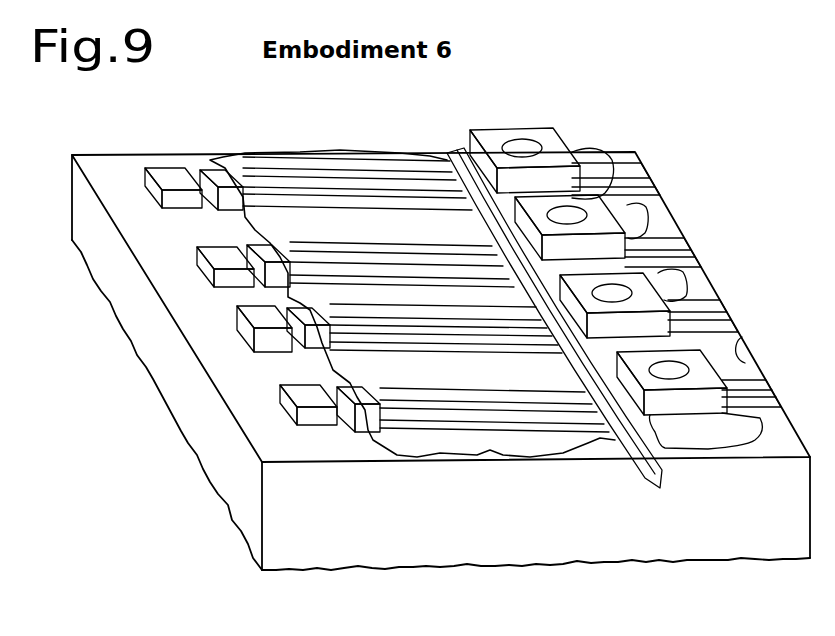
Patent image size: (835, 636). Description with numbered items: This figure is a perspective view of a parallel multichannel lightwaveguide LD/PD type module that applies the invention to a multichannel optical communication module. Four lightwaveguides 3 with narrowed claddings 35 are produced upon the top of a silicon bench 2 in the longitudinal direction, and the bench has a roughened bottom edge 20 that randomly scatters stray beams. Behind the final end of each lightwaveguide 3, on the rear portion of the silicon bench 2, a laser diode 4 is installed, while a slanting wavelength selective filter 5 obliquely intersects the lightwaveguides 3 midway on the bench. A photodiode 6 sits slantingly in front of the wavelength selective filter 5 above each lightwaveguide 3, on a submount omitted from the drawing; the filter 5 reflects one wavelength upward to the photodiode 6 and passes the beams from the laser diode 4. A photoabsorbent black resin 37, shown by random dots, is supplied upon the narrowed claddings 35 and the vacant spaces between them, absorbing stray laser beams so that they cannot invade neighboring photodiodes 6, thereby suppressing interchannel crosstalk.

The silicon bench 2 is at (253, 513).
The lightwaveguide 3 is at (255, 180).
The laser diode 4 is at (168, 165).
The wavelength selective filter 5 is at (462, 168).
The photodiode 6 is at (535, 140).
The substrate edge 20 is at (248, 556).
The narrowed cladding 35 is at (212, 168).
The black resin 37 is at (350, 162).